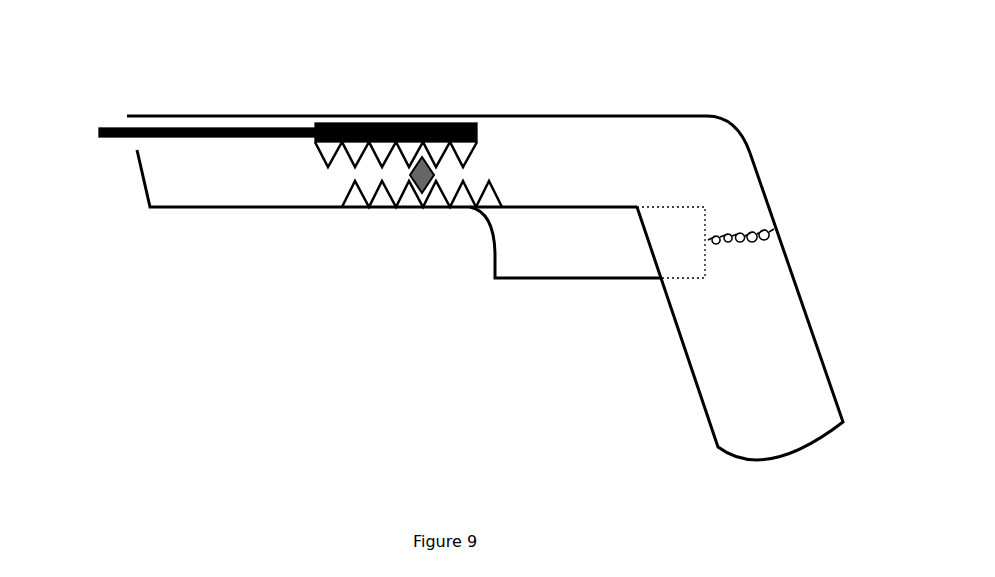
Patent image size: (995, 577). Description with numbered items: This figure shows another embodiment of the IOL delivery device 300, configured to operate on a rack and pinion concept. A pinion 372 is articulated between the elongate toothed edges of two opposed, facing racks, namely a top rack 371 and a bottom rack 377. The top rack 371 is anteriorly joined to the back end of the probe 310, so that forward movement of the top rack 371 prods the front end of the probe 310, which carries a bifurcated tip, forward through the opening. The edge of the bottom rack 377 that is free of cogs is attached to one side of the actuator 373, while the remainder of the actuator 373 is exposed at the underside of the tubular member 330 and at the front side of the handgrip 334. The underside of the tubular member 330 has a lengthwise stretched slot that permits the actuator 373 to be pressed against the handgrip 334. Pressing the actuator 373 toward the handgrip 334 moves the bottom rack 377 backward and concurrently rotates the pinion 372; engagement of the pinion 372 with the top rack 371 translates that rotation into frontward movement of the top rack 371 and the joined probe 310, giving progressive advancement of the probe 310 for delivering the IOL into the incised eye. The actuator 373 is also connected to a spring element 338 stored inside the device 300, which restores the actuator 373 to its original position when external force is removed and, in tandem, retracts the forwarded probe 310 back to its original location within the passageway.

The device 300 is at (138, 87).
The probe 310 is at (243, 129).
The tubular member 330 is at (267, 180).
The handgrip 334 is at (738, 378).
The spring element 338 is at (738, 233).
The top rack 371 is at (428, 130).
The pinion 372 is at (435, 178).
The actuator 373 is at (550, 263).
The bottom rack 377 is at (407, 195).